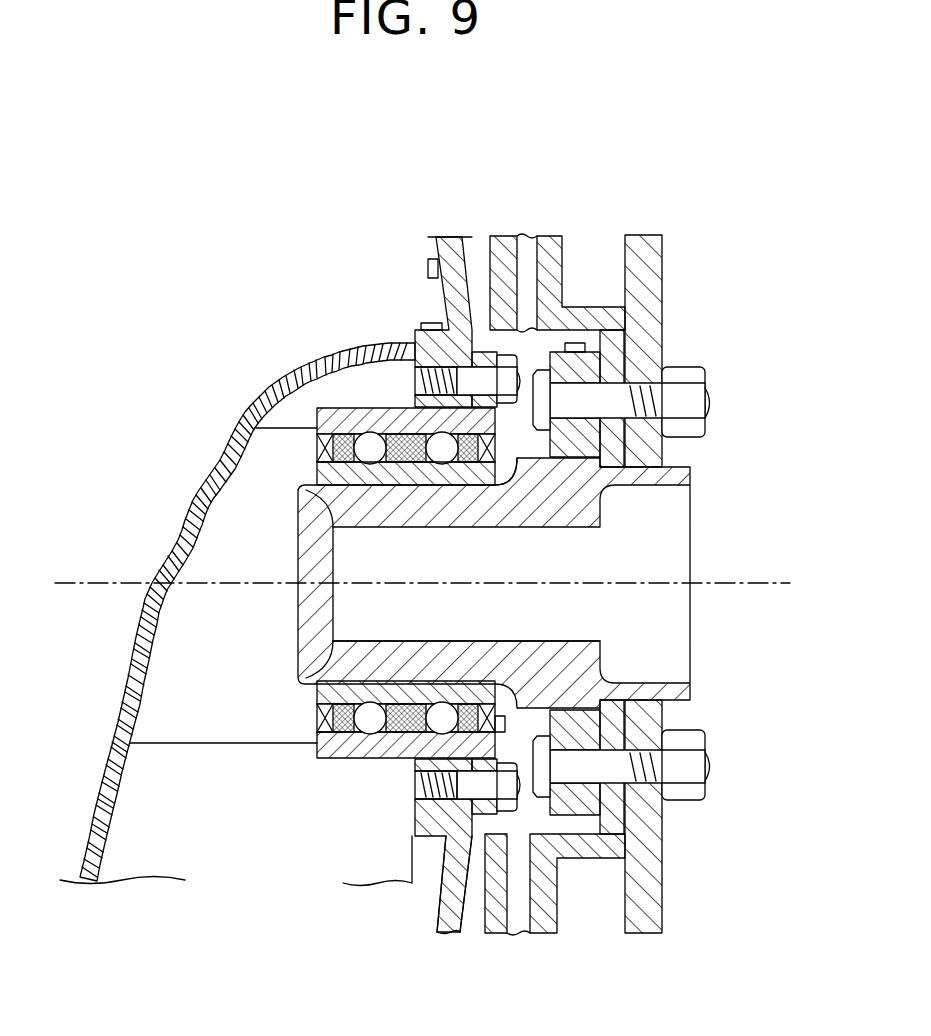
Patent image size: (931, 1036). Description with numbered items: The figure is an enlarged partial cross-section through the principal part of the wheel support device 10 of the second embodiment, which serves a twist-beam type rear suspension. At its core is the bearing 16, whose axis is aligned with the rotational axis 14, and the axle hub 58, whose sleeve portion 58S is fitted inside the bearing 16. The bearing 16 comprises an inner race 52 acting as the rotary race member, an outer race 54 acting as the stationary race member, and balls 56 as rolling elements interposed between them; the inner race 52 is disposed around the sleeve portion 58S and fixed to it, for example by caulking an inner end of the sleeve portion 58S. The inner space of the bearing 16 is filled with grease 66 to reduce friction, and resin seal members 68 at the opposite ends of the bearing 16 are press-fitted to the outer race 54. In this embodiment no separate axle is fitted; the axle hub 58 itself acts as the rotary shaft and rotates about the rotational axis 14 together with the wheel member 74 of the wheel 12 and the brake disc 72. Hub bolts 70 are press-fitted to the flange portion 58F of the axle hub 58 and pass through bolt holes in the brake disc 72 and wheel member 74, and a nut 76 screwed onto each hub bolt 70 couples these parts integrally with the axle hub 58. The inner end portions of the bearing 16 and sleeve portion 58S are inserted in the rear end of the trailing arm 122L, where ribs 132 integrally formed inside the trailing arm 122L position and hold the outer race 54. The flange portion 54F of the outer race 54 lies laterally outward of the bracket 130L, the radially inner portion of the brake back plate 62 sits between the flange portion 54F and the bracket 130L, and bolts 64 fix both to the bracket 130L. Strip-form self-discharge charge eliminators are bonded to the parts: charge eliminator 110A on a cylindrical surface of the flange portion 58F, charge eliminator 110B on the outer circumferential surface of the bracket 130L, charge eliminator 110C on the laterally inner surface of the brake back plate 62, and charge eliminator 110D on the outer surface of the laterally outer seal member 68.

The wheel support device 10 is at (258, 312).
The wheel 12 is at (682, 231).
The rotational axis 14 is at (766, 580).
The bearing 16 is at (360, 492).
The inner race 52 is at (362, 484).
The outer race 54 is at (342, 756).
The flange portion 54F is at (508, 925).
The balls 56 is at (364, 678).
The axle hub 58 is at (522, 583).
The flange portion 58F is at (622, 437).
The sleeve portion 58S is at (448, 663).
The brake back plate 62 is at (452, 238).
The bolts 64 is at (413, 787).
The grease 66 is at (372, 712).
The seal members 68 is at (510, 487).
The hub bolts 70 is at (655, 774).
The brake disc 72 is at (562, 268).
The wheel member 74 is at (650, 287).
The nut 76 is at (695, 765).
The self-discharge type charge eliminator 110A is at (588, 347).
The self-discharge type charge eliminator 110B is at (432, 323).
The self-discharge type charge eliminator 110C is at (428, 268).
The self-discharge type charge eliminator 110D is at (507, 725).
The trailing arm 122L is at (137, 632).
The bracket 130L is at (430, 873).
The ribs 132 is at (298, 405).